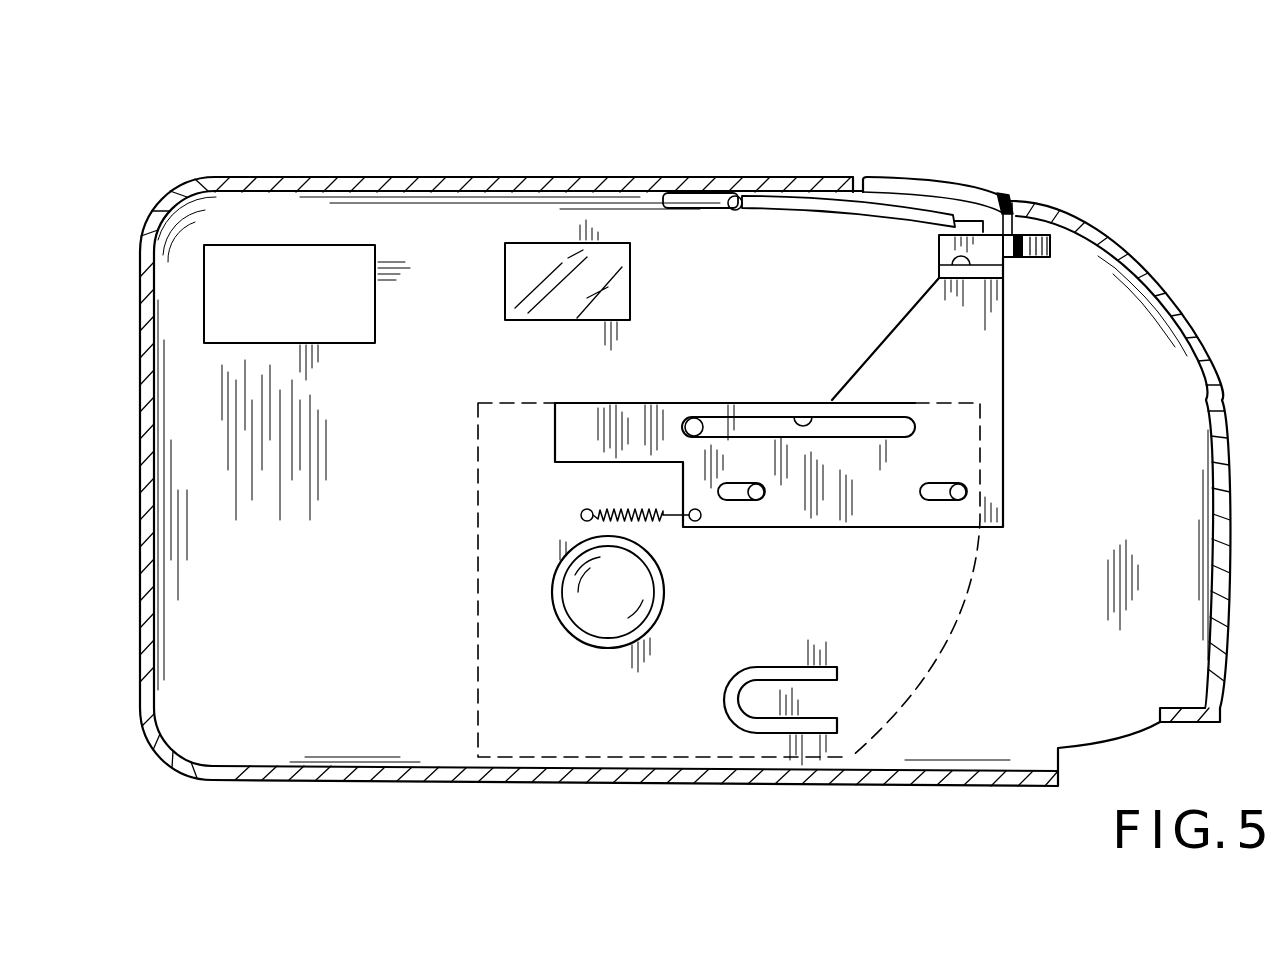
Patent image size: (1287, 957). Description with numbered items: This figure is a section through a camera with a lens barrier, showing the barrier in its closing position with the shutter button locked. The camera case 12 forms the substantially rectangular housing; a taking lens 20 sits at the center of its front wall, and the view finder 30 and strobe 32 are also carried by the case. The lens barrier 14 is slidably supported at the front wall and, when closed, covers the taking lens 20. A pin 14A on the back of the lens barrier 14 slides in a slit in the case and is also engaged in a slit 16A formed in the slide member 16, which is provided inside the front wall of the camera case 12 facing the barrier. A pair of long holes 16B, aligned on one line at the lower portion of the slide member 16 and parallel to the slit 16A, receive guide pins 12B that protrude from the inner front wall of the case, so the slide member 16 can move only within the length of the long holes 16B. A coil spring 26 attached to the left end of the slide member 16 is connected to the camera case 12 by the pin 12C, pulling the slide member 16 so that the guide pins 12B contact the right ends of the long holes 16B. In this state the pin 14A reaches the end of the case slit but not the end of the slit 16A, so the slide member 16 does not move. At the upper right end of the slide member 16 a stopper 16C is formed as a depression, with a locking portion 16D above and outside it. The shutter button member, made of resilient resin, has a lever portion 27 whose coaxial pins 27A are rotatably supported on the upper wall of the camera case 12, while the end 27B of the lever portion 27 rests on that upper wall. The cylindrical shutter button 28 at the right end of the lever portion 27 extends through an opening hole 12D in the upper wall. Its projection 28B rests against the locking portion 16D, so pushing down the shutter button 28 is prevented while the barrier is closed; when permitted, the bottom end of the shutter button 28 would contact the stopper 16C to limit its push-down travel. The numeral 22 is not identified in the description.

The camera case 12 is at (410, 177).
The guide pins 12B is at (757, 500).
The pin 12C is at (582, 519).
The opening hole 12D is at (863, 193).
The lens barrier 14 is at (607, 742).
The pin 14A is at (694, 418).
The slide member 16 is at (1005, 403).
The slit 16A is at (803, 417).
The long holes 16B is at (735, 501).
The stopper 16C is at (970, 267).
The locking portion 16D is at (1036, 258).
The taking lens 20 is at (584, 607).
The clip 22 is at (760, 700).
The coil spring 26 is at (615, 512).
The lever portion 27 is at (810, 201).
The pins 27A is at (738, 198).
The end of lever portion 27B is at (672, 196).
The shutter button 28 is at (947, 190).
The projection 28B is at (1018, 222).
The view finder 30 is at (548, 255).
The strobe 32 is at (270, 263).